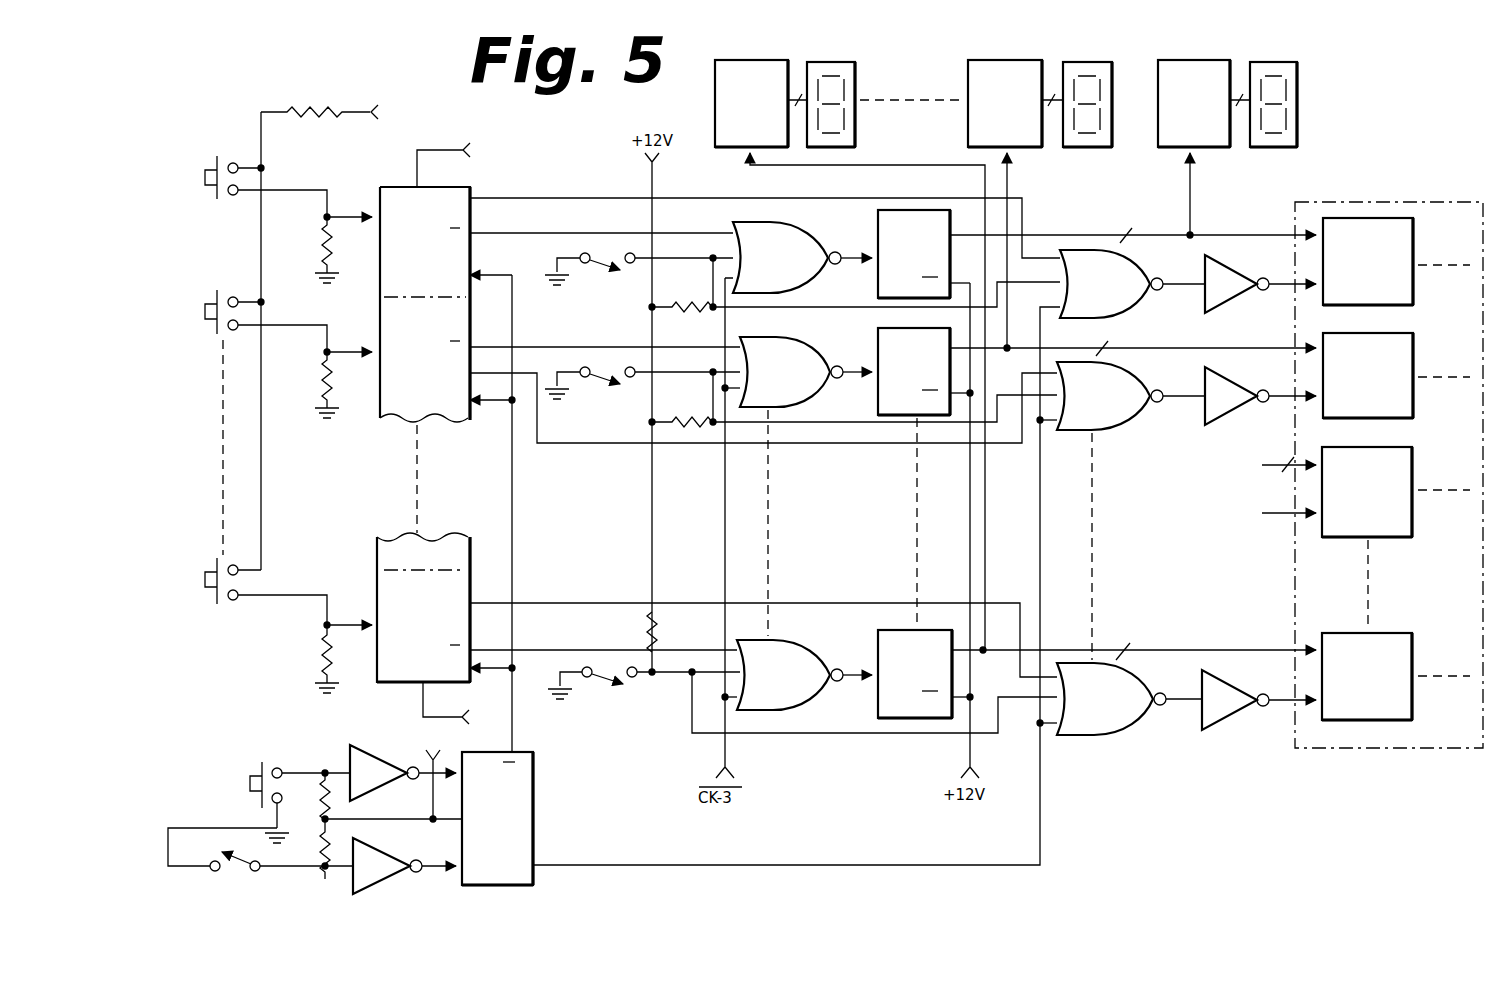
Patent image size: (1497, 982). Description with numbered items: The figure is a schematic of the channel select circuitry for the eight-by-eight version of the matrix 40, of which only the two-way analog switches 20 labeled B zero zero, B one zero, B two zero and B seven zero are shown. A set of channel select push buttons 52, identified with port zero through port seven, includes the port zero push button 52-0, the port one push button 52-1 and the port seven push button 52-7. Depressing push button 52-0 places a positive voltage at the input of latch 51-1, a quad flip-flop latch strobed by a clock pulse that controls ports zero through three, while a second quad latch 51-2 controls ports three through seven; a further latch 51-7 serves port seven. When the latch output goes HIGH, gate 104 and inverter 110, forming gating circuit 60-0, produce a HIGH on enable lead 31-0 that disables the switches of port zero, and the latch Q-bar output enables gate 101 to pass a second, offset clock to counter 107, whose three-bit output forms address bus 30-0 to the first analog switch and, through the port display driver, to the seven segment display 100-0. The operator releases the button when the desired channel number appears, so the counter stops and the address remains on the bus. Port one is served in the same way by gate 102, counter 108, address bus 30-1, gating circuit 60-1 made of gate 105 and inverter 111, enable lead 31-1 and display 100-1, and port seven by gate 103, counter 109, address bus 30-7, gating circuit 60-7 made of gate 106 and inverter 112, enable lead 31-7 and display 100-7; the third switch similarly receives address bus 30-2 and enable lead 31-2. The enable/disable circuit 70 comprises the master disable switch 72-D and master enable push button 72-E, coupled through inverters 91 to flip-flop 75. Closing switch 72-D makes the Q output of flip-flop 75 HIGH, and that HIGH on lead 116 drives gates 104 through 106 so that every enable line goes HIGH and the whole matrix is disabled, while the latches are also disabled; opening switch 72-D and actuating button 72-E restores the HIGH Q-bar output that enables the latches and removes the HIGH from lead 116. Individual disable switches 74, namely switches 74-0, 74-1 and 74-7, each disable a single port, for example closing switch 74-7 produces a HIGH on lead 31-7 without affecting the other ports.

The channel select push buttons 52 is at (196, 662).
The port 0 push button 52-0 is at (228, 158).
The port 1 push button 52-1 is at (232, 288).
The port 7 push button 52-7 is at (228, 602).
The latch 51-1 is at (396, 198).
The second quad latch 51-2 is at (376, 326).
The latch for port 7 51-7 is at (410, 679).
The enable/disable circuit 70 is at (290, 750).
The master enable push button 72-E is at (268, 768).
The master disable switch 72-D is at (238, 861).
The inverter 91 is at (380, 786).
The flip-flop 75 is at (497, 818).
The disable switches 74 is at (600, 742).
The port 0 disable switch 74-0 is at (600, 256).
The port 1 disable switch 74-1 is at (593, 374).
The port 7 disable switch 74-7 is at (617, 640).
The gate 101 is at (802, 257).
The gate 102 is at (806, 372).
The gate 103 is at (804, 675).
The gate 104 is at (1132, 284).
The gate 105 is at (1131, 396).
The gate 106 is at (1129, 699).
The counter 107 is at (878, 222).
The counter 108 is at (881, 340).
The counter 109 is at (882, 644).
The inverter 110 is at (1252, 266).
The inverter 111 is at (1206, 384).
The inverter 112 is at (1204, 724).
The seven segment display for port 7 100-7 is at (842, 134).
The seven segment display for port 1 100-1 is at (1090, 150).
The seven segment display 100-0 is at (1272, 150).
The port 0 gating circuit 60-0 is at (1072, 222).
The port 1 gating circuit 60-1 is at (1136, 450).
The port 7 gating circuit 60-7 is at (1120, 762).
The address bus 30-0 is at (1230, 222).
The address bus 30-1 is at (1195, 348).
The address bus 30-2 is at (1264, 464).
The address bus 30-7 is at (1230, 650).
The enable lead 31-0 is at (1273, 284).
The enable lead 31-1 is at (1276, 398).
The enable lead 31-2 is at (1268, 518).
The enable lead 31-7 is at (1282, 704).
The two-way analog switches 20 is at (1398, 252).
The matrix 40 is at (1384, 206).
The lead 116 is at (1042, 826).